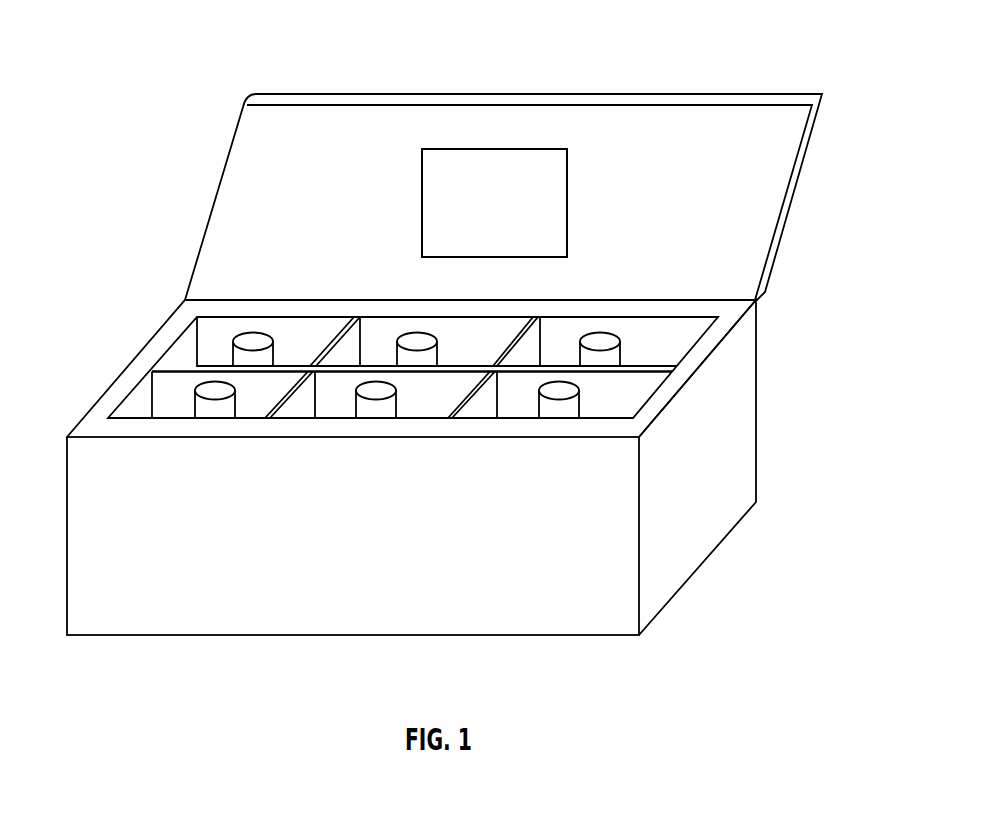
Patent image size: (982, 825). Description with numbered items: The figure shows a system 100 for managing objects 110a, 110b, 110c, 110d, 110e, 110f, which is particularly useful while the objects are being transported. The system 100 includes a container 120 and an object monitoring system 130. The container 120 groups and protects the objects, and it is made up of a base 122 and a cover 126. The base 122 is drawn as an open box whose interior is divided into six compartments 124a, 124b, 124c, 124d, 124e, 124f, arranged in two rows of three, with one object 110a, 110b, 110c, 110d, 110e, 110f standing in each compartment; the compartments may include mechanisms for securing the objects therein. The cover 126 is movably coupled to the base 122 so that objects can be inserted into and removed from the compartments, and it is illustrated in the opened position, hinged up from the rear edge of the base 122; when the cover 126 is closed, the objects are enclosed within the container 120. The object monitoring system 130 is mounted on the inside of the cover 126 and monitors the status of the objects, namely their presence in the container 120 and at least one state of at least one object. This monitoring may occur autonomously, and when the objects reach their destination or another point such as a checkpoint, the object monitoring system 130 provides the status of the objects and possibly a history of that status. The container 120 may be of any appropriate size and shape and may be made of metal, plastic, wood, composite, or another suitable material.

The system 100 is at (208, 57).
The object 110a is at (258, 332).
The object 110b is at (430, 333).
The object 110c is at (614, 333).
The object 110d is at (216, 400).
The object 110e is at (376, 400).
The object 110f is at (558, 400).
The container 120 is at (757, 497).
The base 122 is at (748, 462).
The compartment 124a is at (181, 360).
The compartment 124b is at (375, 331).
The compartment 124c is at (689, 331).
The compartment 124d is at (135, 416).
The compartment 124e is at (345, 407).
The compartment 124f is at (610, 404).
The cover 126 is at (802, 175).
The object monitoring system 130 is at (507, 149).